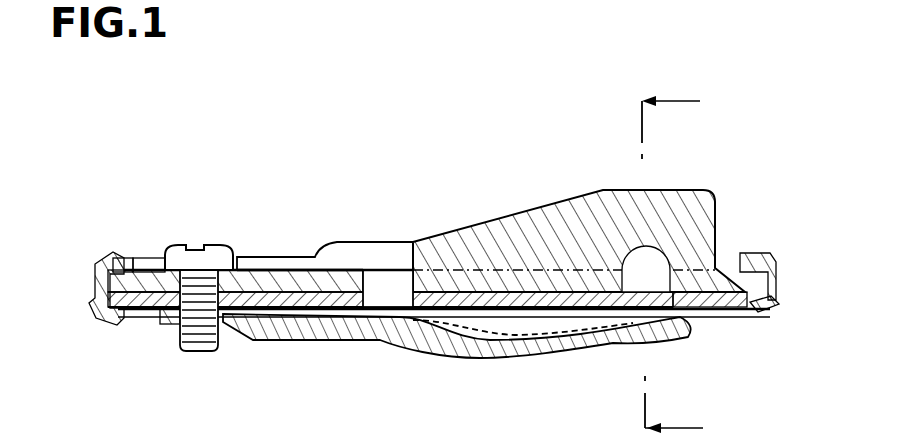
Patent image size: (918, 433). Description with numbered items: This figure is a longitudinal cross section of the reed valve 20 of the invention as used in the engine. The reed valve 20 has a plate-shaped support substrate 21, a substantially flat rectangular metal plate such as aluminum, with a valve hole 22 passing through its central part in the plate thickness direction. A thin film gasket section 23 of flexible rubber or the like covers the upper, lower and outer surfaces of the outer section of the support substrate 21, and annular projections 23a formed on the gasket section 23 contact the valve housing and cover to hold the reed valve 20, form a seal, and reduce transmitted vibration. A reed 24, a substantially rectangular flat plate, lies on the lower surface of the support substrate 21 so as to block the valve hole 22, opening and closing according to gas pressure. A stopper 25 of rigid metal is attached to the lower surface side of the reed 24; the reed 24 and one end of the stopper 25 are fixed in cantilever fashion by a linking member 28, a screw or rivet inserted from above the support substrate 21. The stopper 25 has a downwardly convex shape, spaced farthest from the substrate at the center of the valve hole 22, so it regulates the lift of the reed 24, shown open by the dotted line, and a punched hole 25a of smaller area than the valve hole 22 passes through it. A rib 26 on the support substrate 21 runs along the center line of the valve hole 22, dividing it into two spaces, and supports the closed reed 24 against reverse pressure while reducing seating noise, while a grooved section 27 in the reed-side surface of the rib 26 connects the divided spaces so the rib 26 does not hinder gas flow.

The reed valve 20 is at (229, 124).
The support substrate 21 is at (265, 273).
The valve hole 22 is at (378, 272).
The gasket section 23 is at (103, 307).
The annular projections 23a is at (757, 250).
The reed 24 is at (537, 303).
The stopper 25 is at (587, 343).
The punched hole 25a is at (458, 362).
The rib 26 is at (690, 200).
The grooved section 27 is at (633, 275).
The linking member 28 is at (178, 244).